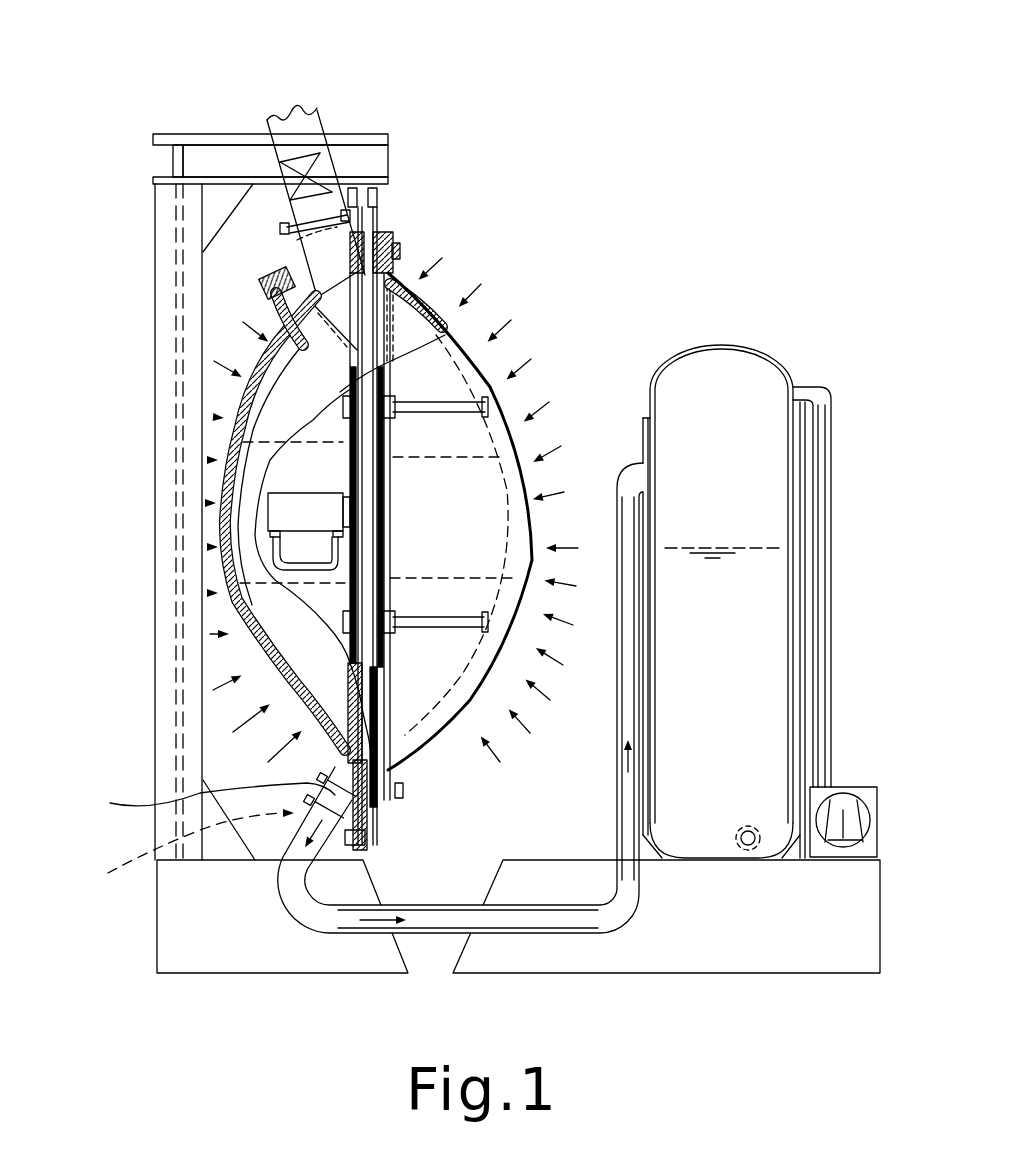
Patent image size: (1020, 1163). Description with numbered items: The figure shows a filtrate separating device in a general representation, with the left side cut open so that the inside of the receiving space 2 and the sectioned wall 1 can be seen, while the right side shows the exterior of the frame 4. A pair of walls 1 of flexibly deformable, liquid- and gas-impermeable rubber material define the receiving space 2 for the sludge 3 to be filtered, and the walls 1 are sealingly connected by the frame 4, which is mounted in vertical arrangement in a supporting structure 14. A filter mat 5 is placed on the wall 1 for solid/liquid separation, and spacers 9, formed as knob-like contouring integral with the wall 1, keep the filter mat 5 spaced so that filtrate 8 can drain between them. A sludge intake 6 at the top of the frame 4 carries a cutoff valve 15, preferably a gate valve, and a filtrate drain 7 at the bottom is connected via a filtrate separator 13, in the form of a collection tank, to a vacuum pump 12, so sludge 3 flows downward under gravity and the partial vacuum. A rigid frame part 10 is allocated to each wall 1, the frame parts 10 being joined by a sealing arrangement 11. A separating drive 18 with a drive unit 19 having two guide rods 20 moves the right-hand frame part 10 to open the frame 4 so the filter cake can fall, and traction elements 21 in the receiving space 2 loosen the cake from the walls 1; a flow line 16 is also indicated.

The wall 1 is at (452, 338).
The receiving space 2 is at (318, 404).
The sludge 3 is at (290, 102).
The frame 4 is at (396, 212).
The filter mat 5 is at (398, 284).
The sludge intake 6 is at (318, 133).
The filtrate drain 7 is at (207, 803).
The filtrate 8 is at (617, 772).
The spacer 9 is at (290, 594).
The frame part 10 is at (358, 820).
The sealing arrangement 11 is at (385, 205).
The vacuum pump 12 is at (857, 803).
The filtrate separator 13 is at (790, 352).
The supporting structure 14 is at (140, 101).
The cutoff valve 15 is at (322, 135).
The flow line 16 is at (180, 859).
The separating drive 18 is at (242, 522).
The drive unit 19 is at (276, 563).
The guide rod 20 is at (458, 402).
The traction element 21 is at (495, 452).